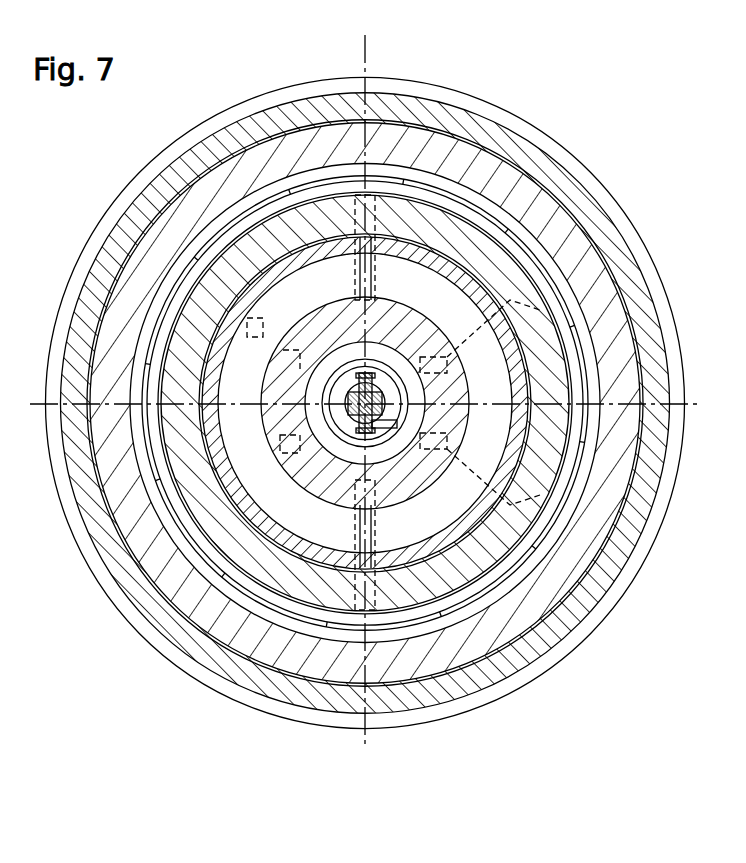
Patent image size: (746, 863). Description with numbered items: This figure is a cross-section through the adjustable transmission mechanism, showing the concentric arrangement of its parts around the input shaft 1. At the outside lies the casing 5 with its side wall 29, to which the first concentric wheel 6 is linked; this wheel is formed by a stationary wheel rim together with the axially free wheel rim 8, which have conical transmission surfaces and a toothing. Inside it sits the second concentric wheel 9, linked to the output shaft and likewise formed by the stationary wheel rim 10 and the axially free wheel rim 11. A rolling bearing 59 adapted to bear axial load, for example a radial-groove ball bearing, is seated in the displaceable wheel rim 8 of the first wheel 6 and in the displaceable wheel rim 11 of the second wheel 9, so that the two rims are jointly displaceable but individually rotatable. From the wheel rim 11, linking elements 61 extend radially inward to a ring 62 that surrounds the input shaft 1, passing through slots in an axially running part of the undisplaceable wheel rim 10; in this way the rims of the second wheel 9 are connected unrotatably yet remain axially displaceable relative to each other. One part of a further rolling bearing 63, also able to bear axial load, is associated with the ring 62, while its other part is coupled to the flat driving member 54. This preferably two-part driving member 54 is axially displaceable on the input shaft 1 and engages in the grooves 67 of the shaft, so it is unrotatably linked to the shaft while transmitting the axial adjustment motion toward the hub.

The input shaft 1 is at (350, 408).
The casing 5 is at (413, 112).
The first concentric wheel 6 is at (198, 212).
The axially free wheel rim 8 is at (438, 152).
The second concentric wheel 9 is at (205, 468).
The stationary wheel rim 10 is at (476, 290).
The axially free wheel rim 11 is at (468, 245).
The side wall of the casing 29 is at (396, 87).
The flat driving member 54 is at (378, 432).
The rolling bearing 59 is at (455, 188).
The linking elements 61 is at (362, 200).
The ring 62 is at (323, 487).
The further rolling bearing 63 is at (393, 428).
The grooves of the input shaft 67 is at (372, 398).